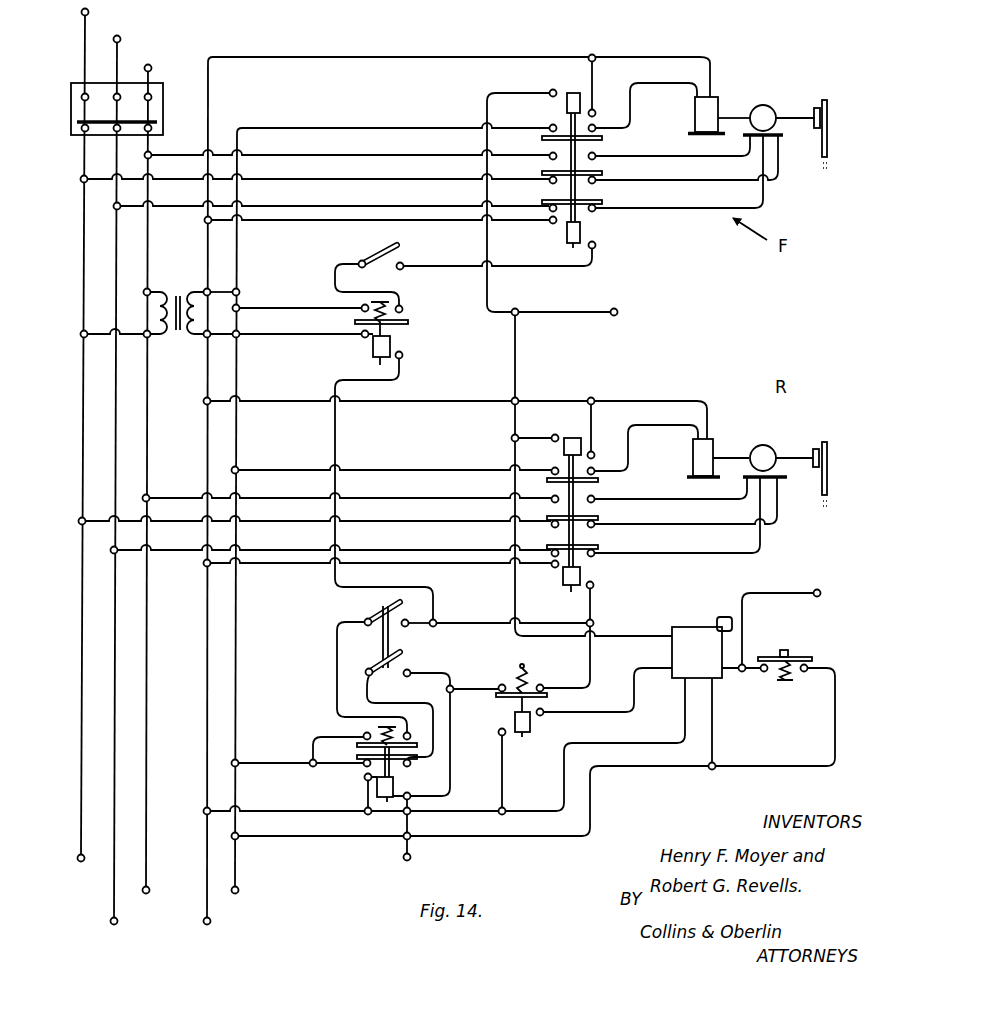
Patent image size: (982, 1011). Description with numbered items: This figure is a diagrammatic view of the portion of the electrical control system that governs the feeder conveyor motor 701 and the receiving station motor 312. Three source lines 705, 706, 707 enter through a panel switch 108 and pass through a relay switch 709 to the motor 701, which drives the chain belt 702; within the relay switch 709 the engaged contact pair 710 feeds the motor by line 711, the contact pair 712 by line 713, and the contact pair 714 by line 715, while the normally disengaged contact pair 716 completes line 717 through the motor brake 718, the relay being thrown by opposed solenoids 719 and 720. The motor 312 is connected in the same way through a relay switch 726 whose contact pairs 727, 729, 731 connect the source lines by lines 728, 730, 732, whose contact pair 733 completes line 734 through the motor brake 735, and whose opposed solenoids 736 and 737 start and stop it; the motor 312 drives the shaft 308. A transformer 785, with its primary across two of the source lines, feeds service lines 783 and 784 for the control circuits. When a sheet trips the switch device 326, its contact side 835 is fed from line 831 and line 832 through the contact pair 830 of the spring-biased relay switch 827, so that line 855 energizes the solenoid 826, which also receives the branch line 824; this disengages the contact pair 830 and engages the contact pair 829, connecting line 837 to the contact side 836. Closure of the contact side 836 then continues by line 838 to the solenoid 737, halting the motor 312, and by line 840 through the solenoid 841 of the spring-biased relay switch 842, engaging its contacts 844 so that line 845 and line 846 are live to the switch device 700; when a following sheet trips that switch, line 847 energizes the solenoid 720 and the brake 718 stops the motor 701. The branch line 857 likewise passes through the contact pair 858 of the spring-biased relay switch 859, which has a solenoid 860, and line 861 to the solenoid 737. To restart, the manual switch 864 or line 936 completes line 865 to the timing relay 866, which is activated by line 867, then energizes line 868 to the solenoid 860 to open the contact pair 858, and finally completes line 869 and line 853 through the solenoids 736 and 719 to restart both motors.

The source line 705 is at (151, 80).
The source line 706 is at (119, 56).
The source line 707 is at (87, 29).
The main switch 108 is at (75, 130).
The service line 784 is at (497, 60).
The service line 783 is at (340, 128).
The line 853 is at (517, 92).
The solenoid 719 is at (573, 93).
The relay switch 709 is at (600, 218).
The contact pair 710 is at (546, 147).
The contact pair 712 is at (546, 176).
The contact pair 714 is at (546, 201).
The contact pair 716 is at (551, 126).
The solenoid 720 is at (567, 237).
The line 717 is at (643, 107).
The motor brake 718 is at (695, 120).
The line 711 is at (635, 158).
The line 713 is at (636, 182).
The line 715 is at (636, 208).
The motor 701 is at (762, 106).
The chain belt 702 is at (829, 140).
The switch device 700 is at (376, 258).
The line 847 is at (418, 265).
The line 846 is at (401, 302).
The line 845 is at (256, 307).
The pair of contacts 844 is at (362, 331).
The spring-biased relay switch 842 is at (400, 336).
The solenoid 841 is at (373, 350).
The transformer 785 is at (177, 338).
The line 840 is at (338, 433).
The contact side 836 is at (375, 618).
The contact side 835 is at (400, 655).
The switch device 326 is at (407, 640).
The line 838 is at (451, 621).
The line 837 is at (336, 672).
The line 832 is at (368, 689).
The contact pair 829 is at (363, 734).
The contact pair 830 is at (364, 767).
The line 831 is at (262, 760).
The spring-biased relay switch 827 is at (396, 762).
The solenoid 826 is at (377, 791).
The branch line 824 is at (404, 855).
The line 855 is at (450, 694).
The branch line 857 is at (500, 686).
The contact pair 858 is at (550, 675).
The solenoid 860 is at (524, 735).
The spring-biased relay switch 859 is at (533, 720).
The line 861 is at (588, 674).
The line 868 is at (636, 671).
The line 869 is at (615, 633).
The timing relay 866 is at (697, 694).
The line 867 is at (721, 616).
The line 936 is at (790, 581).
The line 865 is at (731, 670).
The manual switch 864 is at (788, 650).
The solenoid 737 is at (563, 581).
The relay switch 726 is at (594, 563).
The solenoid 736 is at (570, 437).
The contact pair 733 is at (552, 468).
The line 734 is at (648, 424).
The motor brake 735 is at (694, 464).
The motor 312 is at (761, 445).
The drive shaft 308 is at (829, 477).
The contact pair 727 is at (596, 501).
The line 728 is at (675, 501).
The contact pair 729 is at (596, 526).
The line 730 is at (676, 526).
The contact pair 731 is at (596, 555).
The line 732 is at (676, 555).